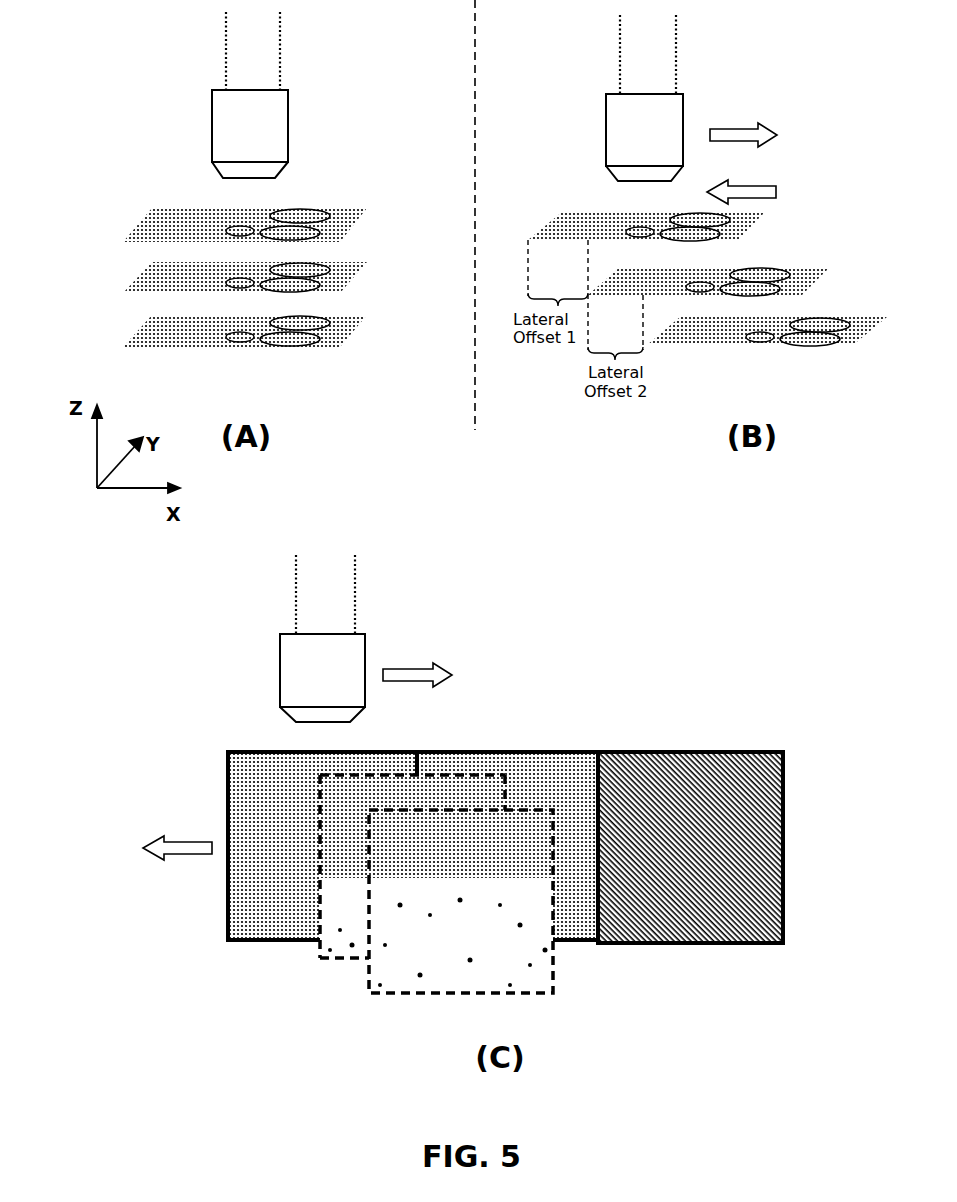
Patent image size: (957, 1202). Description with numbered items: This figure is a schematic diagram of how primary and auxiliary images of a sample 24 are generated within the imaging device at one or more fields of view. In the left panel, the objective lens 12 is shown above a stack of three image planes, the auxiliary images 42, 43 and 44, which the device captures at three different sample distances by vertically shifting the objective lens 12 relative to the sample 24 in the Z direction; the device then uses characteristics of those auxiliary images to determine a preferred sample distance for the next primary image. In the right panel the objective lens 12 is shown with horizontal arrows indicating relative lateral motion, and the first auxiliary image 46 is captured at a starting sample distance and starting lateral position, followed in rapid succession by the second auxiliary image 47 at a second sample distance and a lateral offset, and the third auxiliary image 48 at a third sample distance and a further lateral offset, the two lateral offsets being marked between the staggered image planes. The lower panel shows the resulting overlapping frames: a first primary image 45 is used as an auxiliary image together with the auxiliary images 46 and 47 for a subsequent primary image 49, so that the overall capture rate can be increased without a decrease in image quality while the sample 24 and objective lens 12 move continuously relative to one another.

The objective lens 12 is at (288, 127).
The sample 24 is at (237, 279).
The auxiliary image 42 is at (357, 216).
The auxiliary image 43 is at (357, 272).
The auxiliary image 44 is at (357, 325).
The primary image 45 is at (278, 930).
The first auxiliary image 46 is at (758, 216).
The second auxiliary image 47 is at (820, 271).
The third auxiliary image 48 is at (843, 347).
The primary image 49 is at (577, 945).